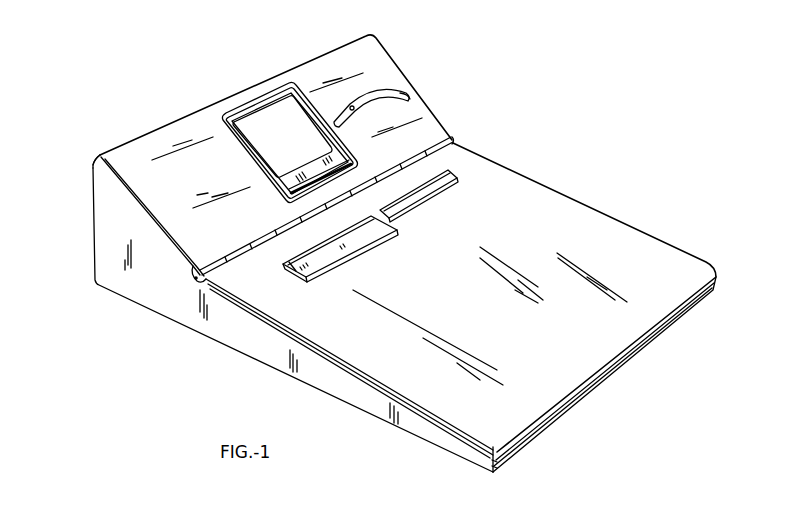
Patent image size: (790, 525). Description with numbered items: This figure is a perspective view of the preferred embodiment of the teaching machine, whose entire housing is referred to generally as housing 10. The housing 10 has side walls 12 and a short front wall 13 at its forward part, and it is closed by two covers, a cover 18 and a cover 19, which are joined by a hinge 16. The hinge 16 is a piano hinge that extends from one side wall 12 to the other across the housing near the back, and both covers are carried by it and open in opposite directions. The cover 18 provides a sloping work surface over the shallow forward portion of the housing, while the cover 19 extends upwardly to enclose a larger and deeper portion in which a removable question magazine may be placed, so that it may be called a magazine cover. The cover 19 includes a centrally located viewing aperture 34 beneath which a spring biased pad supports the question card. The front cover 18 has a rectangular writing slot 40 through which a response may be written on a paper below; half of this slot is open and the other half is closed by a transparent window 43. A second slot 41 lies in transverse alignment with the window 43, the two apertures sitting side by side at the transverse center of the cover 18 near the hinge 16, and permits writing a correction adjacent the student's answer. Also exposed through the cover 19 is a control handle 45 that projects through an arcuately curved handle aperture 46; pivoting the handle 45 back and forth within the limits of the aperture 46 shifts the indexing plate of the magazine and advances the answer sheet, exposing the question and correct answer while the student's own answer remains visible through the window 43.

The housing 10 is at (404, 265).
The side walls 12 is at (267, 353).
The short front wall 13 is at (498, 461).
The hinge 16 is at (453, 141).
The cover 18 is at (645, 238).
The cover 19 is at (423, 108).
The viewing aperture 34 is at (252, 100).
The rectangular writing slot 40 is at (377, 238).
The slot 41 is at (438, 184).
The transparent window 43 is at (293, 263).
The control handle 45 is at (352, 104).
The arcuately curved handle aperture 46 is at (400, 95).